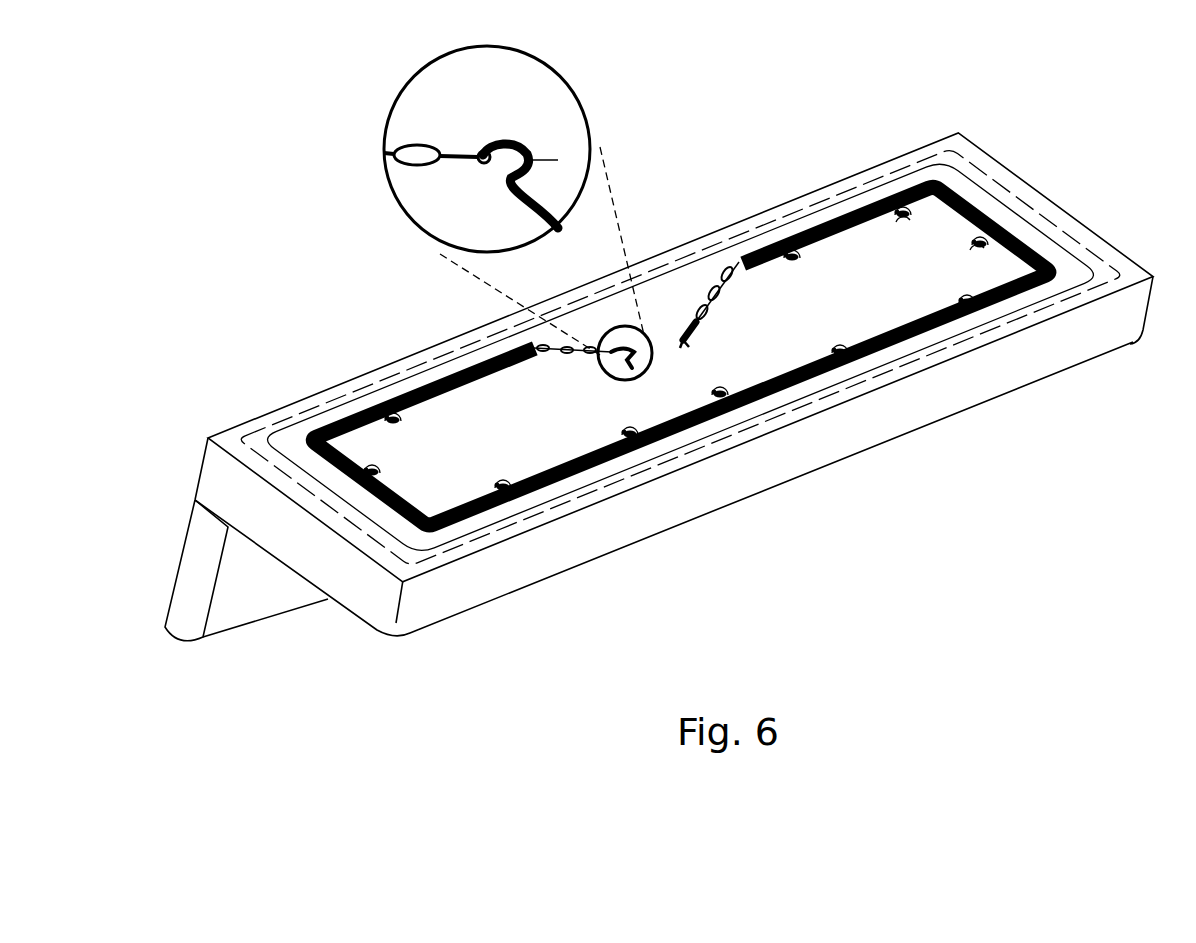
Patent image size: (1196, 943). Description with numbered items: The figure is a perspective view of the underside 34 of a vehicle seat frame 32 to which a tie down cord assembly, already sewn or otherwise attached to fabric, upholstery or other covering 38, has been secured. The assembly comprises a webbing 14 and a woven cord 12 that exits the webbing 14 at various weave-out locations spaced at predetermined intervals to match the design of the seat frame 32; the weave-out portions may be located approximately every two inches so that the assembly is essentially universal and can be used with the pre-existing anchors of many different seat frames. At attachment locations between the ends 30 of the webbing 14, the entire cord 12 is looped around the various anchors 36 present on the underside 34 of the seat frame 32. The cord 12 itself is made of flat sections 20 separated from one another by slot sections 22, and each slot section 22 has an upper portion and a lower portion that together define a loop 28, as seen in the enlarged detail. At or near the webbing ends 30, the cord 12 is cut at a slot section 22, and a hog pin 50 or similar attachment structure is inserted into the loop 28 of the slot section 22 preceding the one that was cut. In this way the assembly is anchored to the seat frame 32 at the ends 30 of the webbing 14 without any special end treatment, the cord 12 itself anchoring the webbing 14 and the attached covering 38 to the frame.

The cord 12 is at (495, 112).
The webbing 14 is at (963, 190).
The flat sections 20 is at (450, 157).
The slot sections 22 is at (408, 163).
The loop 28 is at (477, 163).
The ends of the webbing 30 is at (537, 333).
The vehicle seat frame 32 is at (245, 598).
The underside 34 is at (1130, 278).
The anchors 36 is at (903, 222).
The covering 38 is at (1030, 238).
The hog pin 50 is at (522, 153).